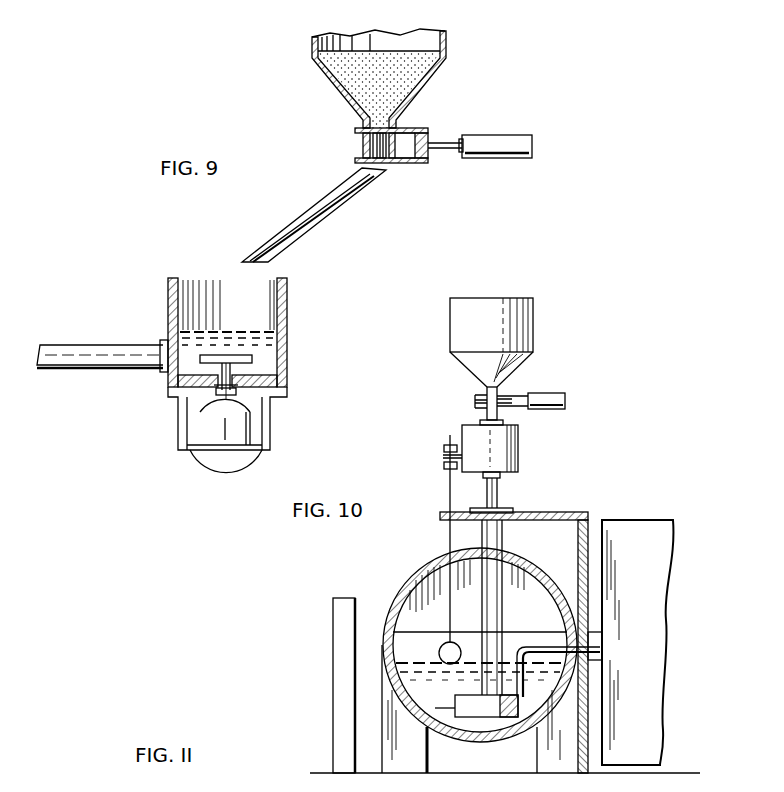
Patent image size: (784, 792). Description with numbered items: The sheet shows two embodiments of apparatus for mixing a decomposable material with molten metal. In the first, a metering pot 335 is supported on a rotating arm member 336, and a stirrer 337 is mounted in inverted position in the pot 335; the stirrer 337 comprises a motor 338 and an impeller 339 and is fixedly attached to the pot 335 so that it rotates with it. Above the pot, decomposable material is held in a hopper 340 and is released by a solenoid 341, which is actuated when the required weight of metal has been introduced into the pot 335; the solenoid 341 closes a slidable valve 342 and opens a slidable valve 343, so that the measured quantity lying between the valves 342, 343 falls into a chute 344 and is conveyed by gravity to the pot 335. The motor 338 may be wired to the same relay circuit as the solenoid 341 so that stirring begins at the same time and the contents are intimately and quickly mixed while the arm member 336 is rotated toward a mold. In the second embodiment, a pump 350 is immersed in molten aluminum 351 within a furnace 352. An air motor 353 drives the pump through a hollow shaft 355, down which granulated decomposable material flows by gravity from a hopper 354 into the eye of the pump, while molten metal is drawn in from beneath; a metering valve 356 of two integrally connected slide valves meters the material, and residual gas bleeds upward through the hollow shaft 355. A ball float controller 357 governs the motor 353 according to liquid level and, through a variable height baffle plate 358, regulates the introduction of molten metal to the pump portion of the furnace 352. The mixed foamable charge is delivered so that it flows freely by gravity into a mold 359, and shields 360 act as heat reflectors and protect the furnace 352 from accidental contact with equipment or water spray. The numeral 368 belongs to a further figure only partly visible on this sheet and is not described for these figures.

In FIG. 9, the hopper 340 is at (450, 48).
In FIG. 9, the solenoid 341 is at (490, 139).
In FIG. 9, the slidable valve 342 is at (360, 129).
In FIG. 9, the slidable valve 343 is at (360, 158).
In FIG. 9, the chute 344 is at (332, 200).
In FIG. 9, the metering pot 335 is at (168, 318).
In FIG. 9, the rotating arm member 336 is at (121, 350).
In FIG. 9, the stirrer 337 is at (284, 406).
In FIG. 9, the motor 338 is at (204, 438).
In FIG. 9, the impeller 339 is at (243, 355).
In FIG. 10, the pump 350 is at (470, 700).
In FIG. 10, the molten aluminum 351 is at (467, 723).
In FIG. 10, the furnace 352 is at (413, 583).
In FIG. 10, the air motor 353 is at (470, 437).
In FIG. 10, the hopper 354 is at (466, 320).
In FIG. 10, the hollow shaft 355 is at (498, 490).
In FIG. 10, the metering valve 356 is at (514, 386).
In FIG. 10, the ball float controller 357 is at (450, 540).
In FIG. 10, the variable height baffle plate 358 is at (525, 638).
In FIG. 10, the mold 359 is at (643, 532).
In FIG. 10, the shields 360 is at (345, 663).
In FIG. 11, the element 368 is at (228, 791).